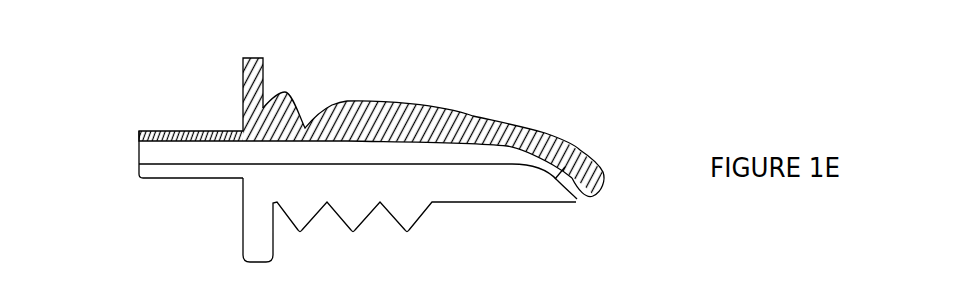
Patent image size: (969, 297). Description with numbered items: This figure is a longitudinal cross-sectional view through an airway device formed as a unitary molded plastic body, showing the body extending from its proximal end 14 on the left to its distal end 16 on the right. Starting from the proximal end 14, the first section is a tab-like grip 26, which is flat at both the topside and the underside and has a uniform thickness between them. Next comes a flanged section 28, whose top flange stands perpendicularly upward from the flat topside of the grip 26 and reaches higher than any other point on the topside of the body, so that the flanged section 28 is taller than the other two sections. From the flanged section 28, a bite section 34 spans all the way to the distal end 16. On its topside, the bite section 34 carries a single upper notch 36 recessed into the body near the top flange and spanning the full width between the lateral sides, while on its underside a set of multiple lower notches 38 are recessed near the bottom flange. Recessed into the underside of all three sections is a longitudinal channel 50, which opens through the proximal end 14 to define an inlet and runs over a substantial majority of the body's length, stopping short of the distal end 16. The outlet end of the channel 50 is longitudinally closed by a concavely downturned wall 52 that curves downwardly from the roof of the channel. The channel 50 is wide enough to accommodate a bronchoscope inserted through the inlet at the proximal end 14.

The proximal end 14 is at (138, 167).
The distal end 16 is at (603, 178).
The tab-like grip 26 is at (179, 124).
The flanged section 28 is at (275, 57).
The bite section 34 is at (445, 102).
The upper notch 36 is at (308, 104).
The lower notches 38 is at (282, 229).
The longitudinal channel 50 is at (275, 165).
The concavely downturned wall 52 is at (574, 197).